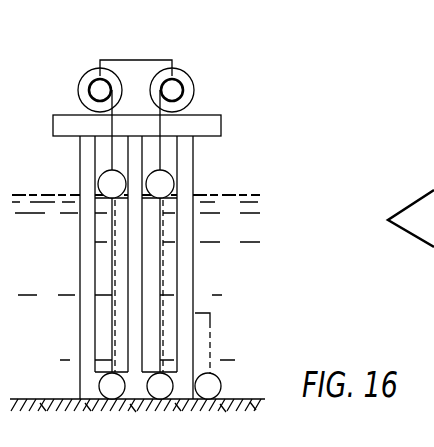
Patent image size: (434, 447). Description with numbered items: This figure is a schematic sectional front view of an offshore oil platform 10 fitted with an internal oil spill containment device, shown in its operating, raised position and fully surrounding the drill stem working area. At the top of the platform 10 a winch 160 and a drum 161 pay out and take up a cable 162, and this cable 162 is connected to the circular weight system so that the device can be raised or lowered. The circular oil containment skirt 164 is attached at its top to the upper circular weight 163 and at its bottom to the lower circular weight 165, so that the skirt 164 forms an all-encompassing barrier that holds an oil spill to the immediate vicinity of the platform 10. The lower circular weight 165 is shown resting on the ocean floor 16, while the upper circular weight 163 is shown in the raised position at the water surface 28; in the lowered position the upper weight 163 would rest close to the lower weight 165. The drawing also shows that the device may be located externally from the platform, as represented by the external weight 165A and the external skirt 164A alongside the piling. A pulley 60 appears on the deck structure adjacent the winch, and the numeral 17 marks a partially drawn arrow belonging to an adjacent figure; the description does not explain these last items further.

The offshore oil platform 10 is at (221, 122).
The ocean floor 16 is at (48, 398).
The adjacent figure arrow 17 is at (411, 194).
The water surface 28 is at (245, 195).
The pulley 60 is at (80, 85).
The winch 160 is at (193, 80).
The drum 161 is at (112, 86).
The cable 162 is at (112, 129).
The upper circular weight 163 is at (163, 188).
The circular oil containment skirt 164 is at (110, 240).
The skirt 164A is at (210, 322).
The lower circular weight 165 is at (168, 375).
The weight 165A is at (222, 382).